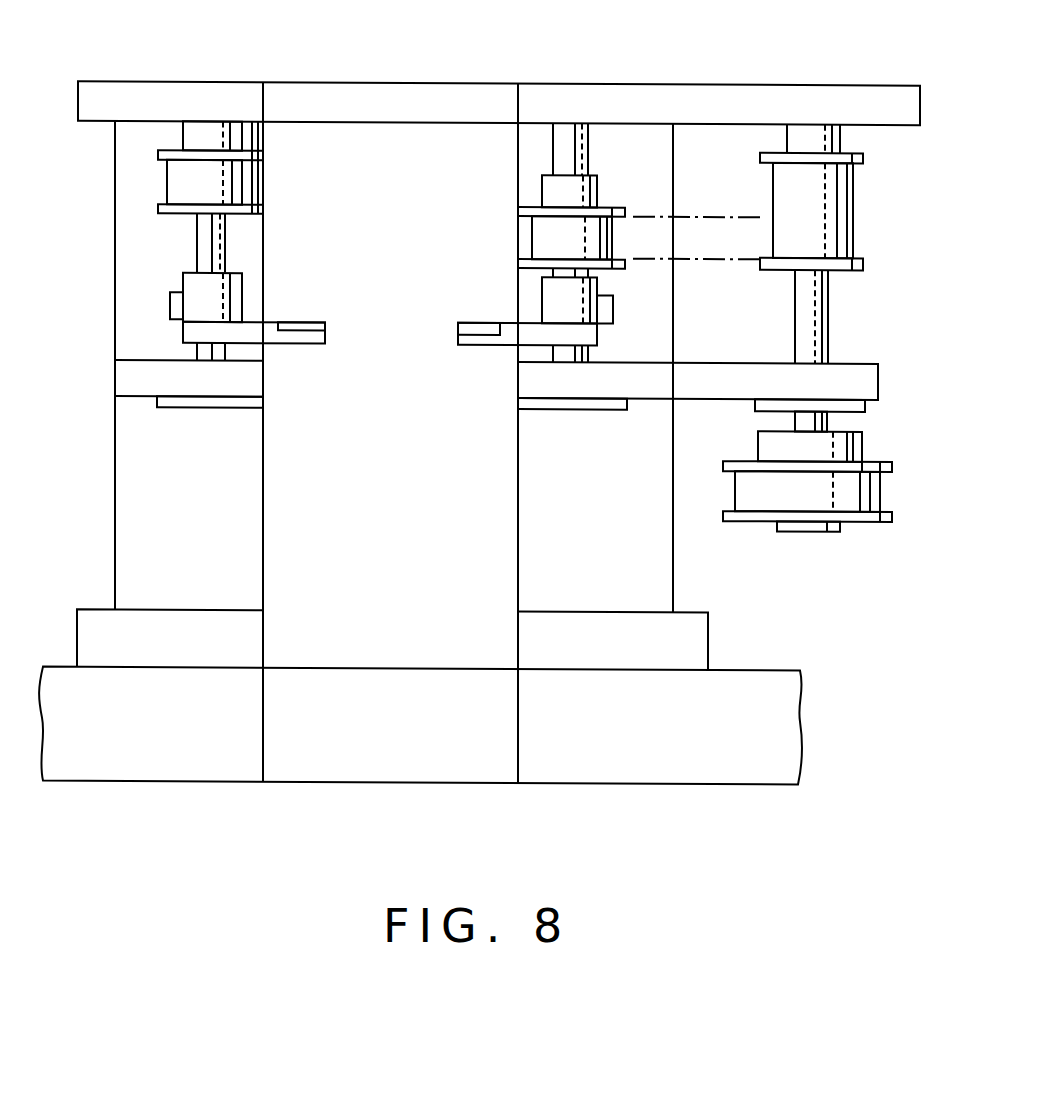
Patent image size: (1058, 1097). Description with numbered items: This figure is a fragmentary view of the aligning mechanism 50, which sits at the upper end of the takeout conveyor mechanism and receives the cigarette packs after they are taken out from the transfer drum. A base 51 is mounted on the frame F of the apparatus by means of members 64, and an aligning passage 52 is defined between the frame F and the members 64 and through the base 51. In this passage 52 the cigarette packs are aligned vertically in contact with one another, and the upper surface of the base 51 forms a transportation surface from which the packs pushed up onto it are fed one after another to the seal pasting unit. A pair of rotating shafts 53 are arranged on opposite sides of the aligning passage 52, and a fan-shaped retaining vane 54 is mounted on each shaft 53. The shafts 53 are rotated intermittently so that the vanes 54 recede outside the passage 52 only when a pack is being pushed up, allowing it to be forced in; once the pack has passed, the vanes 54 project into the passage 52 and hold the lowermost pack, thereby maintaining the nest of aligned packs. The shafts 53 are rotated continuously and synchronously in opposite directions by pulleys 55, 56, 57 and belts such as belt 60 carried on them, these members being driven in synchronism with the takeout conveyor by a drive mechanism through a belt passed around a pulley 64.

The aligning mechanism 50 is at (762, 608).
The base 51 is at (765, 87).
The aligning passage 52 is at (422, 493).
The rotating shafts 53 is at (220, 250).
The retaining vane 54 is at (313, 347).
The pulley 55 is at (250, 188).
The pulley 56 is at (538, 240).
The pulley 57 is at (850, 216).
The belt 60 is at (741, 262).
The members 64 is at (255, 572).
The frame F is at (787, 741).